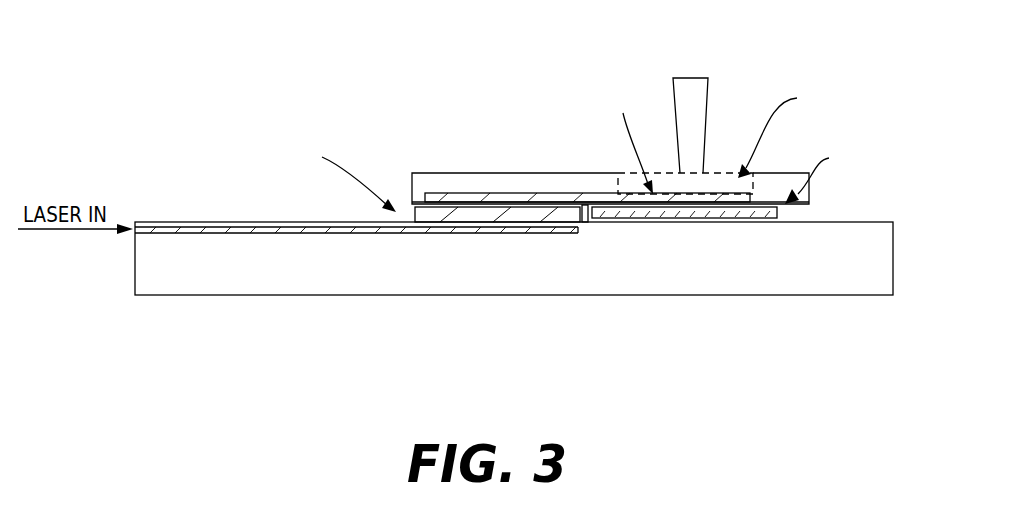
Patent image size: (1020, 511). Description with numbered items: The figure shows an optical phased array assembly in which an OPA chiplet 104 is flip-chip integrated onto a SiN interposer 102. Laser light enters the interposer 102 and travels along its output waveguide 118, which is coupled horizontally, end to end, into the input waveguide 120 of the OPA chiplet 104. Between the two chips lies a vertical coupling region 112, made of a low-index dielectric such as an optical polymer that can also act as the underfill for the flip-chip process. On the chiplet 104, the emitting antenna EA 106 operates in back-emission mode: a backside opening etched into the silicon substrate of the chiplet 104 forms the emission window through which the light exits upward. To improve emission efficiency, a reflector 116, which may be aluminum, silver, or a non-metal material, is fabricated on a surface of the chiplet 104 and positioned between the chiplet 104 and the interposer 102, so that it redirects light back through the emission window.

The SiN interposer 102 is at (443, 263).
The OPA chiplet 104 is at (576, 185).
The EA 106 is at (720, 200).
The vertical coupling region 112 is at (413, 210).
The reflector 116 is at (715, 220).
The output waveguide 118 is at (220, 223).
The input waveguide 120 is at (583, 222).